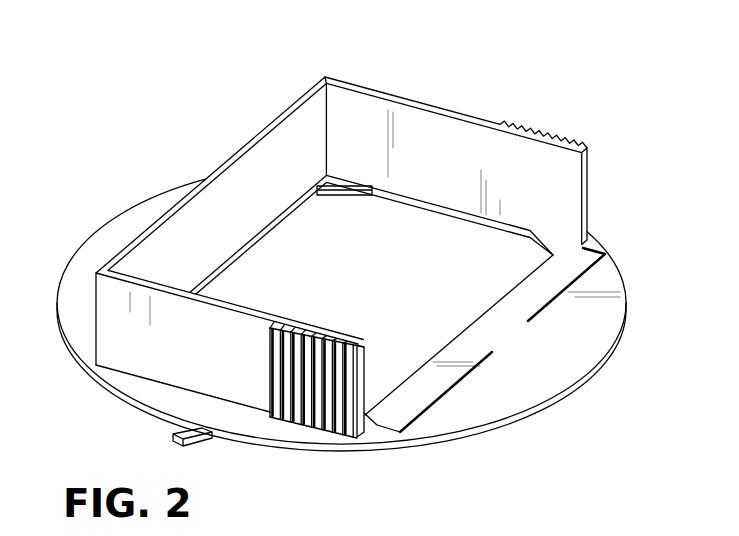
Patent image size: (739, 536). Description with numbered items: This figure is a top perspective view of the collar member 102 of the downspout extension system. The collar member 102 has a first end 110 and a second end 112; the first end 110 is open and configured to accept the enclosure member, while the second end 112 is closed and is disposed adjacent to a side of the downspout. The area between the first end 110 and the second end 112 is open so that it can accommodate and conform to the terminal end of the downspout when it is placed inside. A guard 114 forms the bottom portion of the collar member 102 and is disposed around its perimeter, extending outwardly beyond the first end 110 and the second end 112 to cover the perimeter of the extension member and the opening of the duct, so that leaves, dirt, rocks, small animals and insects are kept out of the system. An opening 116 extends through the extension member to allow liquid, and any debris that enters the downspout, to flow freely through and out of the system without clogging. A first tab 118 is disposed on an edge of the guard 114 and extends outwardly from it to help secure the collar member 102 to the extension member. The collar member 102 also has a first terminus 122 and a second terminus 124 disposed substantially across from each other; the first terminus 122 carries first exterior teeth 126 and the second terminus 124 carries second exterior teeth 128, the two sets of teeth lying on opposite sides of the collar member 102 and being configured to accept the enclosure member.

The collar member 102 is at (84, 252).
The first end 110 is at (484, 340).
The second end 112 is at (270, 152).
The guard 114 is at (580, 347).
The opening 116 is at (387, 277).
The first tab 118 is at (177, 431).
The first terminus 122 is at (355, 433).
The second terminus 124 is at (568, 162).
The first exterior teeth 126 is at (317, 410).
The second exterior teeth 128 is at (551, 133).